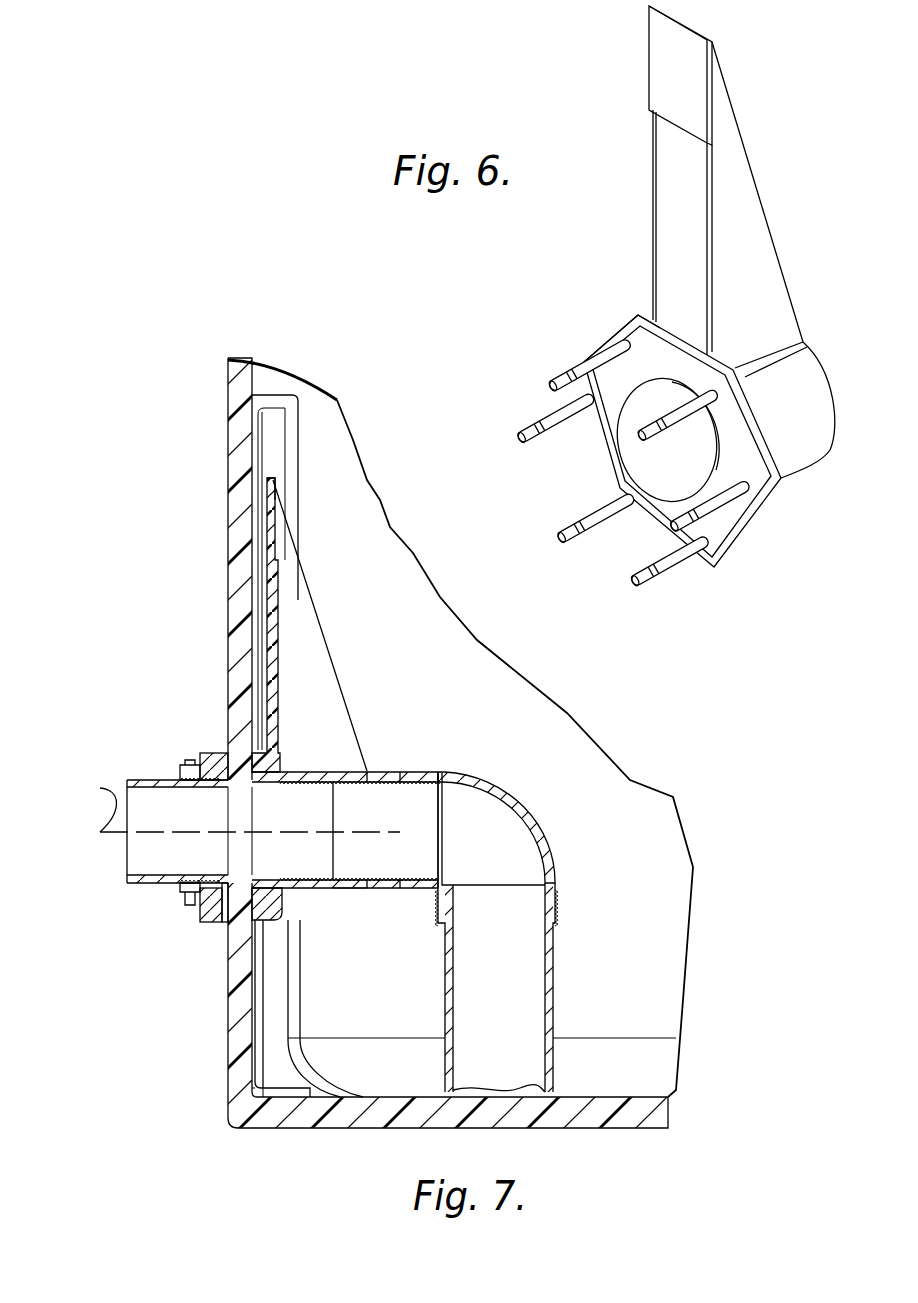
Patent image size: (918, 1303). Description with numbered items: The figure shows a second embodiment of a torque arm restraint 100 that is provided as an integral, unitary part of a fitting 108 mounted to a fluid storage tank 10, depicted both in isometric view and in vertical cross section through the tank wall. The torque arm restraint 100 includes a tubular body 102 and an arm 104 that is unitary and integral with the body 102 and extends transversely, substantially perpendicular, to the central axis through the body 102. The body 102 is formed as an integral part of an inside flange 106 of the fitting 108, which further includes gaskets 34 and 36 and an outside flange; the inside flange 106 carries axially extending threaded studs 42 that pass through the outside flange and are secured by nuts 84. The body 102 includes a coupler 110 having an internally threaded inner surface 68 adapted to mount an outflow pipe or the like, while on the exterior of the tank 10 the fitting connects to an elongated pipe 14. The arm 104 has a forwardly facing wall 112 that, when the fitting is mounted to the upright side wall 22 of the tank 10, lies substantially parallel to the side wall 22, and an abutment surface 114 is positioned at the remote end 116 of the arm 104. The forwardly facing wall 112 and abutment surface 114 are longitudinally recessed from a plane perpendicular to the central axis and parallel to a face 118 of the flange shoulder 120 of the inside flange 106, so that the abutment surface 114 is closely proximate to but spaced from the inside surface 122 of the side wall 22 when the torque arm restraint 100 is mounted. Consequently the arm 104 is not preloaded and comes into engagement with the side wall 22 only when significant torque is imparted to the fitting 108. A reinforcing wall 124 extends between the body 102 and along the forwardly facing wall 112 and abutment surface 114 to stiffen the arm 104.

In FIG. 7, the fluid storage tank 10 is at (164, 443).
In FIG. 7, the elongated pipe 14 is at (160, 885).
In FIG. 7, the side wall 22 is at (227, 520).
In FIG. 7, the gasket 34 is at (293, 1021).
In FIG. 7, the gasket 36 is at (226, 924).
In FIG. 6, the threaded studs 42 is at (598, 545).
In FIG. 7, the internally threaded inner surface 68 is at (333, 788).
In FIG. 7, the nuts 84 is at (192, 762).
In FIG. 6, the torque arm restraint 100 is at (550, 271).
In FIG. 7, the torque arm restraint 100 is at (372, 678).
In FIG. 6, the body 102 is at (792, 480).
In FIG. 7, the body 102 is at (340, 762).
In FIG. 6, the arm 104 is at (645, 180).
In FIG. 7, the arm 104 is at (325, 609).
In FIG. 7, the inside flange 106 is at (272, 905).
In FIG. 7, the fitting 108 is at (218, 925).
In FIG. 6, the coupler 110 is at (803, 450).
In FIG. 7, the coupler 110 is at (350, 890).
In FIG. 6, the forwardly facing wall 112 is at (672, 230).
In FIG. 7, the forwardly facing wall 112 is at (273, 632).
In FIG. 6, the abutment surface 114 is at (666, 60).
In FIG. 7, the abutment surface 114 is at (262, 480).
In FIG. 6, the remote end 116 is at (710, 40).
In FIG. 6, the face 118 is at (615, 470).
In FIG. 6, the flange shoulder 120 is at (612, 330).
In FIG. 7, the flange shoulder 120 is at (268, 930).
In FIG. 7, the inside surface 122 is at (258, 598).
In FIG. 6, the reinforcing wall 124 is at (742, 188).
In FIG. 7, the reinforcing wall 124 is at (296, 585).